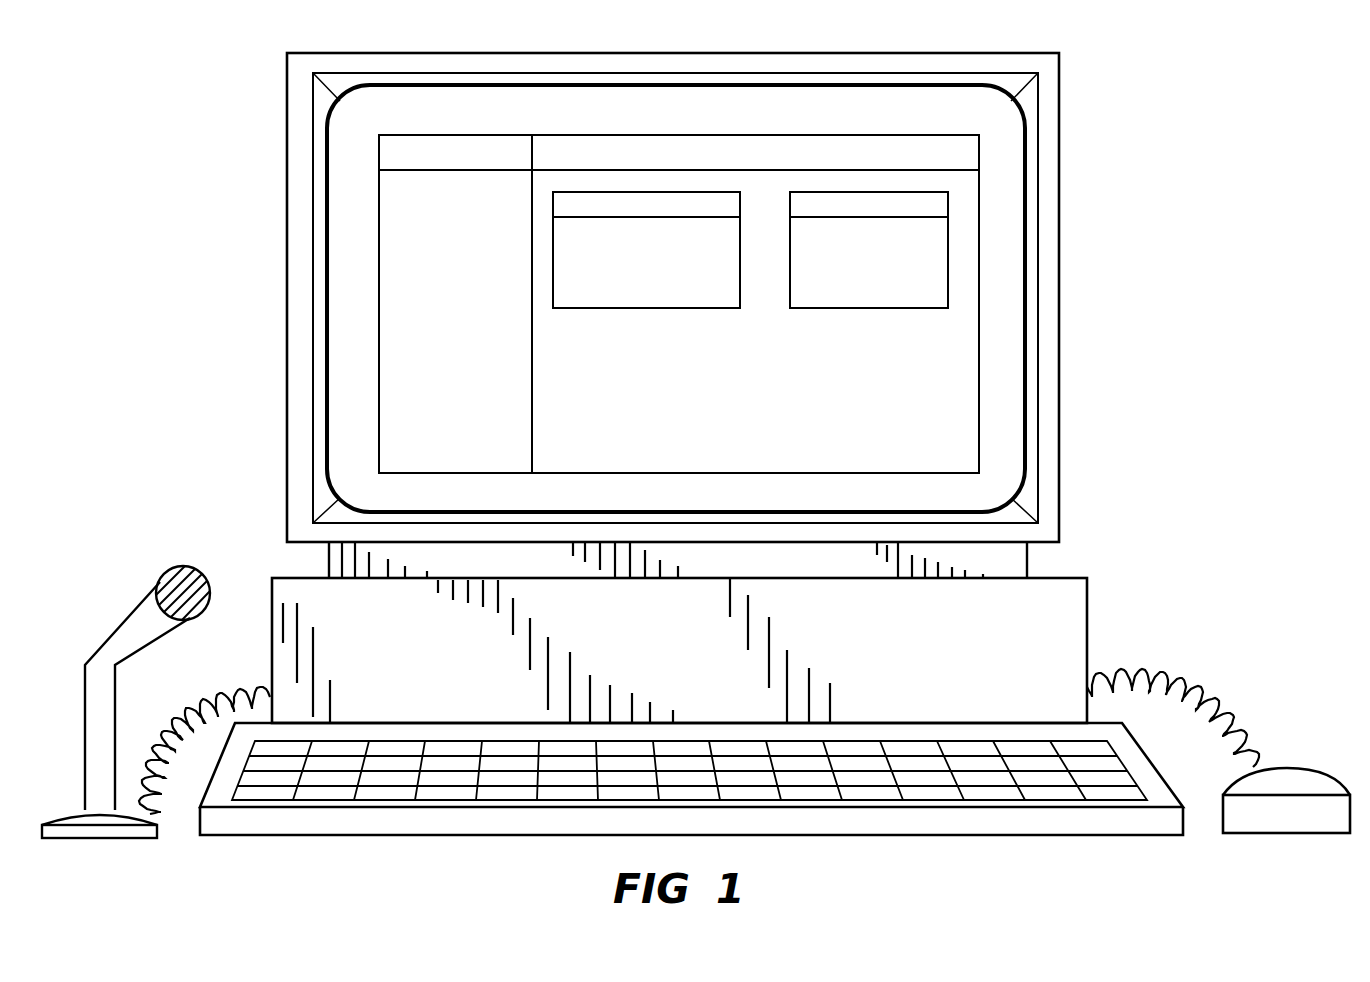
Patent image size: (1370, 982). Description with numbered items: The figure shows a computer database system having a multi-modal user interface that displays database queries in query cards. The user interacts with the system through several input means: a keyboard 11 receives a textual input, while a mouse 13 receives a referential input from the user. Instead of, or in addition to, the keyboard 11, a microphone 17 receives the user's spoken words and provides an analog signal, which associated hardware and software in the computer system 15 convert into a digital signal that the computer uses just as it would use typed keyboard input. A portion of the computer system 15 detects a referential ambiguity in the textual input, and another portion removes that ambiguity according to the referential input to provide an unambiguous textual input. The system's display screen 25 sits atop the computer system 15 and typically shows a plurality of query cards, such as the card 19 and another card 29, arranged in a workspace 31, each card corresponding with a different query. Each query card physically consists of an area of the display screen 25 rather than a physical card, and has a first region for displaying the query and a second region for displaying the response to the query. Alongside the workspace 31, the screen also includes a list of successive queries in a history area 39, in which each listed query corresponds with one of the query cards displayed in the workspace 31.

The keyboard 11 is at (1158, 770).
The mouse 13 is at (1307, 767).
The computer system 15 is at (1087, 615).
The microphone 17 is at (123, 618).
The query card 19 is at (663, 308).
The display screen 25 is at (1059, 222).
The card 29 is at (830, 308).
The workspace 31 is at (714, 437).
The history area 39 is at (476, 437).